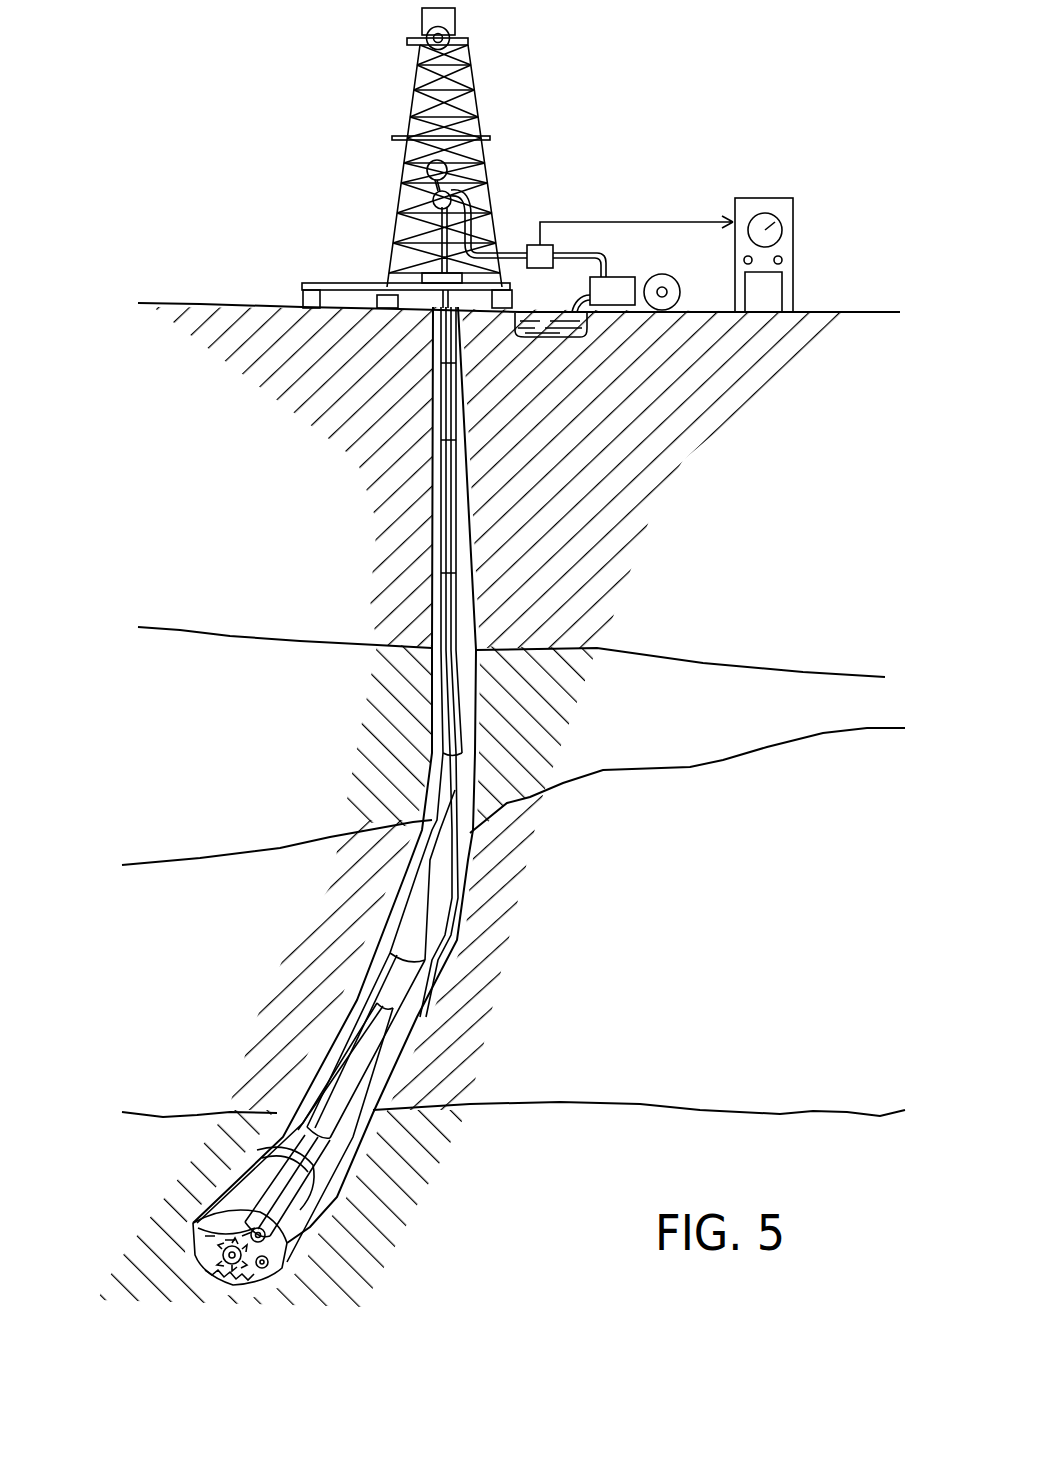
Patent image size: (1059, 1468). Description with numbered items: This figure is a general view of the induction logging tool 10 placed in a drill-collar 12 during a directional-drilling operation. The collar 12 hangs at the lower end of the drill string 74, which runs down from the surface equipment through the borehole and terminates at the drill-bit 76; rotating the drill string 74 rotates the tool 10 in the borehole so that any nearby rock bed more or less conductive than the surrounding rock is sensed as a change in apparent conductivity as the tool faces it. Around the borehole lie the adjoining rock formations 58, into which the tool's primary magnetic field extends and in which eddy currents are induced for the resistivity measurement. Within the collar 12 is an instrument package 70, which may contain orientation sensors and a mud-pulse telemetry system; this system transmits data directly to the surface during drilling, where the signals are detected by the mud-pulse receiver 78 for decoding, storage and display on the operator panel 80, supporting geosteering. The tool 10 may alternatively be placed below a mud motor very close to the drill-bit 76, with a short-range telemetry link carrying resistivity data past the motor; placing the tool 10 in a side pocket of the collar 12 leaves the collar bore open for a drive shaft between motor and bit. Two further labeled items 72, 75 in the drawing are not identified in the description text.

The induction logging tool 10 is at (389, 1071).
The drill-collar 12 is at (312, 1150).
The rock formations 58 is at (538, 702).
The instrument package 70 is at (403, 983).
The drilling rig derrick 72 is at (493, 72).
The drill string 74 is at (445, 520).
The drill string 75 is at (457, 898).
The drill-bit 76 is at (293, 1198).
The mud-pulse receiver 78 is at (530, 245).
The operator panel 80 is at (792, 247).